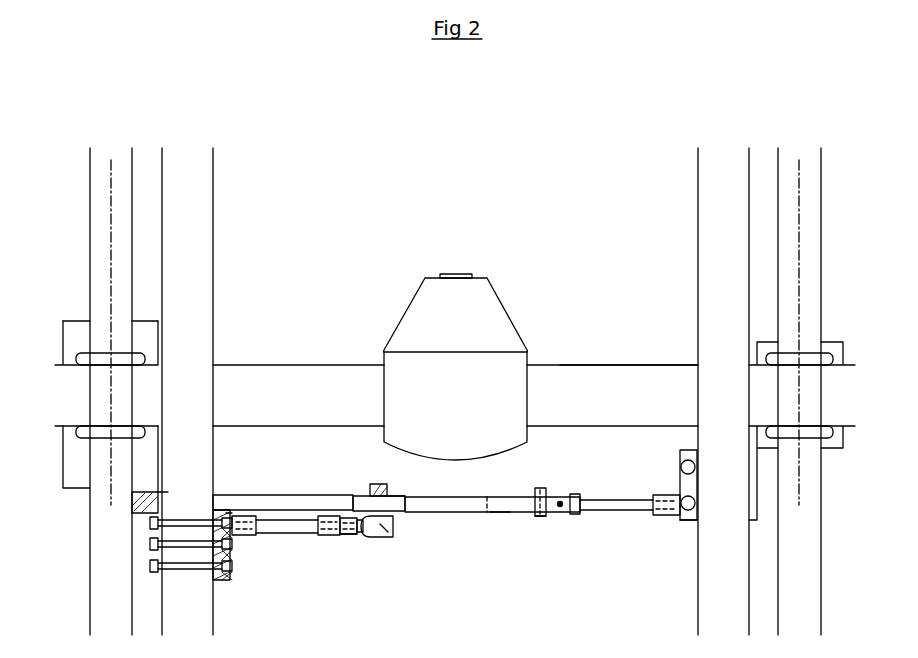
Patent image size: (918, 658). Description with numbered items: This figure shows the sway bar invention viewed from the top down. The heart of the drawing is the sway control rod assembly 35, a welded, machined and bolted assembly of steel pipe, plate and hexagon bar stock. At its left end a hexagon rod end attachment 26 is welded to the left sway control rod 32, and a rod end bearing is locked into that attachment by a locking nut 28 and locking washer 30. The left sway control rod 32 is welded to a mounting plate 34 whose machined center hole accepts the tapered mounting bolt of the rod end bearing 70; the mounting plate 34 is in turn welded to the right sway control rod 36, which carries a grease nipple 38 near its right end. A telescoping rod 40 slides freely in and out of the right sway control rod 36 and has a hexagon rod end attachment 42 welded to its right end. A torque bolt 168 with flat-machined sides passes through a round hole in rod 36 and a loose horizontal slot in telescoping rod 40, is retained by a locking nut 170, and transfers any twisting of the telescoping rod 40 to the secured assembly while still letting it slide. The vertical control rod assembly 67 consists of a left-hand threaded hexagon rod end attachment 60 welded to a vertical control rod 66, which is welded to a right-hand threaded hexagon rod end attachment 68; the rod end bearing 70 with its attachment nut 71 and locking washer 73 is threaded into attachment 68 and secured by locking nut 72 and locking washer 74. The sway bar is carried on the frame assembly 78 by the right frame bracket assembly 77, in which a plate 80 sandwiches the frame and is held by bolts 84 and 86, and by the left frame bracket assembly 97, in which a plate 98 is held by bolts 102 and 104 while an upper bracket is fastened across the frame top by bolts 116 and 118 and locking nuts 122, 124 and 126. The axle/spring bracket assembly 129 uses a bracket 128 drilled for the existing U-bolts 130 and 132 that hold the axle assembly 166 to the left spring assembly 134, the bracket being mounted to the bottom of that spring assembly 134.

The hexagon rod end attachment 26 is at (163, 490).
The locking nut 28 is at (134, 502).
The locking washer 30 is at (145, 488).
The left sway control rod 32 is at (265, 503).
The mounting plate 34 is at (361, 497).
The sway control rod assembly 35 is at (461, 496).
The right sway control rod 36 is at (497, 513).
The grease nipple 38 is at (560, 510).
The telescoping rod 40 is at (608, 505).
The hexagon rod end attachment 42 is at (660, 512).
The left-hand threaded hexagon rod end attachment 60 is at (247, 515).
The vertical control rod 66 is at (295, 522).
The vertical control rod assembly 67 is at (314, 538).
The right-hand threaded hexagon rod end attachment 68 is at (342, 538).
The rod end bearing 70 is at (380, 525).
The attachment nut 71 is at (387, 493).
The locking nut 72 is at (358, 536).
The locking washer 73 is at (388, 493).
The locking washer 74 is at (348, 537).
The right frame bracket assembly 77 is at (692, 518).
The frame assembly 78 is at (187, 160).
The plate 80 is at (688, 515).
The bolt 84 is at (682, 498).
The bolt 86 is at (683, 463).
The left frame bracket assembly 97 is at (220, 583).
The plate 98 is at (228, 583).
The bolt 102 is at (232, 565).
The bolt 104 is at (233, 533).
The bolt 116 is at (189, 520).
The bolt 118 is at (187, 566).
The locking nut 122 is at (227, 516).
The locking nut 124 is at (236, 555).
The locking nut 126 is at (232, 575).
The bracket 128 is at (68, 333).
The axle/spring bracket assembly 129 is at (78, 320).
The U-bolt 130 is at (88, 428).
The U-bolt 132 is at (90, 357).
The spring assembly 134 is at (100, 197).
The axle assembly 166 is at (602, 378).
The torque bolt 168 is at (540, 516).
The locking nut 170 is at (541, 490).